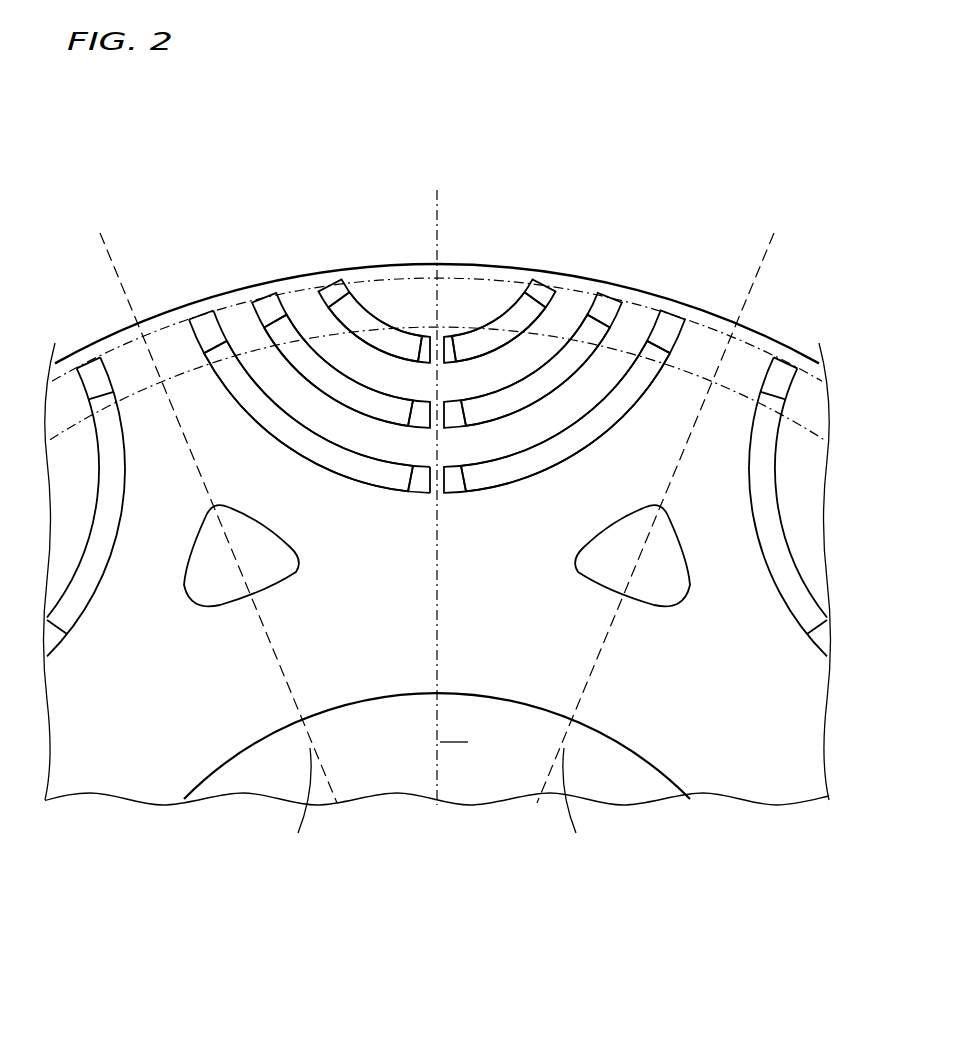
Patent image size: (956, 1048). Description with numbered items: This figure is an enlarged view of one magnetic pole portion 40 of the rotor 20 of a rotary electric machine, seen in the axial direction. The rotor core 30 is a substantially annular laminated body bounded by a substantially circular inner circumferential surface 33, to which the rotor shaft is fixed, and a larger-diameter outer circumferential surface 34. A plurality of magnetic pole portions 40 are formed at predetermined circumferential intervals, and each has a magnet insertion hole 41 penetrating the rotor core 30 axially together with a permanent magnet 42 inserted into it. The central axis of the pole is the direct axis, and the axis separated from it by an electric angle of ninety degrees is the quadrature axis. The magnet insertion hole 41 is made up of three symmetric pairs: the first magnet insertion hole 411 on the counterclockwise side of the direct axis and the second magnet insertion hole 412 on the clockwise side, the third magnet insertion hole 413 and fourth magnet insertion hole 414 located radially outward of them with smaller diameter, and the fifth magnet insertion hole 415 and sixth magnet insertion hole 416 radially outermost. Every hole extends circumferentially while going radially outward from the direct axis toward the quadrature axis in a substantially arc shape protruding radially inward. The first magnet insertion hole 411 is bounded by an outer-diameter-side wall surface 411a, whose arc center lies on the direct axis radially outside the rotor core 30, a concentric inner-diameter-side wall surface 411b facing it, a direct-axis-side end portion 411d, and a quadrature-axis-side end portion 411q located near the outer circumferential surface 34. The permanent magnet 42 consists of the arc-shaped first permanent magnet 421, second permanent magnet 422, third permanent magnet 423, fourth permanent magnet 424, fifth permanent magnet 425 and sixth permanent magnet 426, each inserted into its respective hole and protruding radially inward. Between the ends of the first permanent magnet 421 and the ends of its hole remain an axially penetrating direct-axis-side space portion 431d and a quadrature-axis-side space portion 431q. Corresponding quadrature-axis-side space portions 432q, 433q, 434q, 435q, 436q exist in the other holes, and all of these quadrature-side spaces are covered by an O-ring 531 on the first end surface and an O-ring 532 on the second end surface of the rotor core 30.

The rotor 20 is at (198, 168).
The rotor core 30 is at (636, 690).
The inner circumferential surface 33 is at (360, 706).
The outer circumferential surface 34 is at (765, 335).
The magnetic pole portion 40 is at (447, 300).
The magnet insertion hole 41 is at (430, 368).
The permanent magnet 42 is at (437, 378).
The first magnet insertion hole 411 is at (340, 468).
The outer-diameter-side wall surface 411a is at (318, 465).
The inner-diameter-side wall surface 411b is at (285, 414).
The d-axis-side end portion 411d is at (420, 485).
The q-axis-side end portion 411q is at (250, 394).
The second magnet insertion hole 412 is at (652, 378).
The third magnet insertion hole 413 is at (333, 380).
The fourth magnet insertion hole 414 is at (522, 402).
The fifth magnet insertion hole 415 is at (403, 340).
The sixth magnet insertion hole 416 is at (468, 345).
The first permanent magnet 421 is at (312, 452).
The second permanent magnet 422 is at (600, 416).
The third permanent magnet 423 is at (358, 392).
The fourth permanent magnet 424 is at (485, 408).
The fifth permanent magnet 425 is at (386, 345).
The sixth permanent magnet 426 is at (495, 340).
The d-axis-side space portion 431d is at (412, 482).
The q-axis-side space portion 431q is at (212, 327).
The q-axis-side space portion 432q is at (665, 327).
The q-axis-side space portion 433q is at (267, 303).
The q-axis-side space portion 434q is at (603, 306).
The q-axis-side space portion 435q is at (330, 290).
The q-axis-side space portion 436q is at (545, 290).
The O-ring 531 is at (127, 377).
The O-ring 532 is at (437, 383).